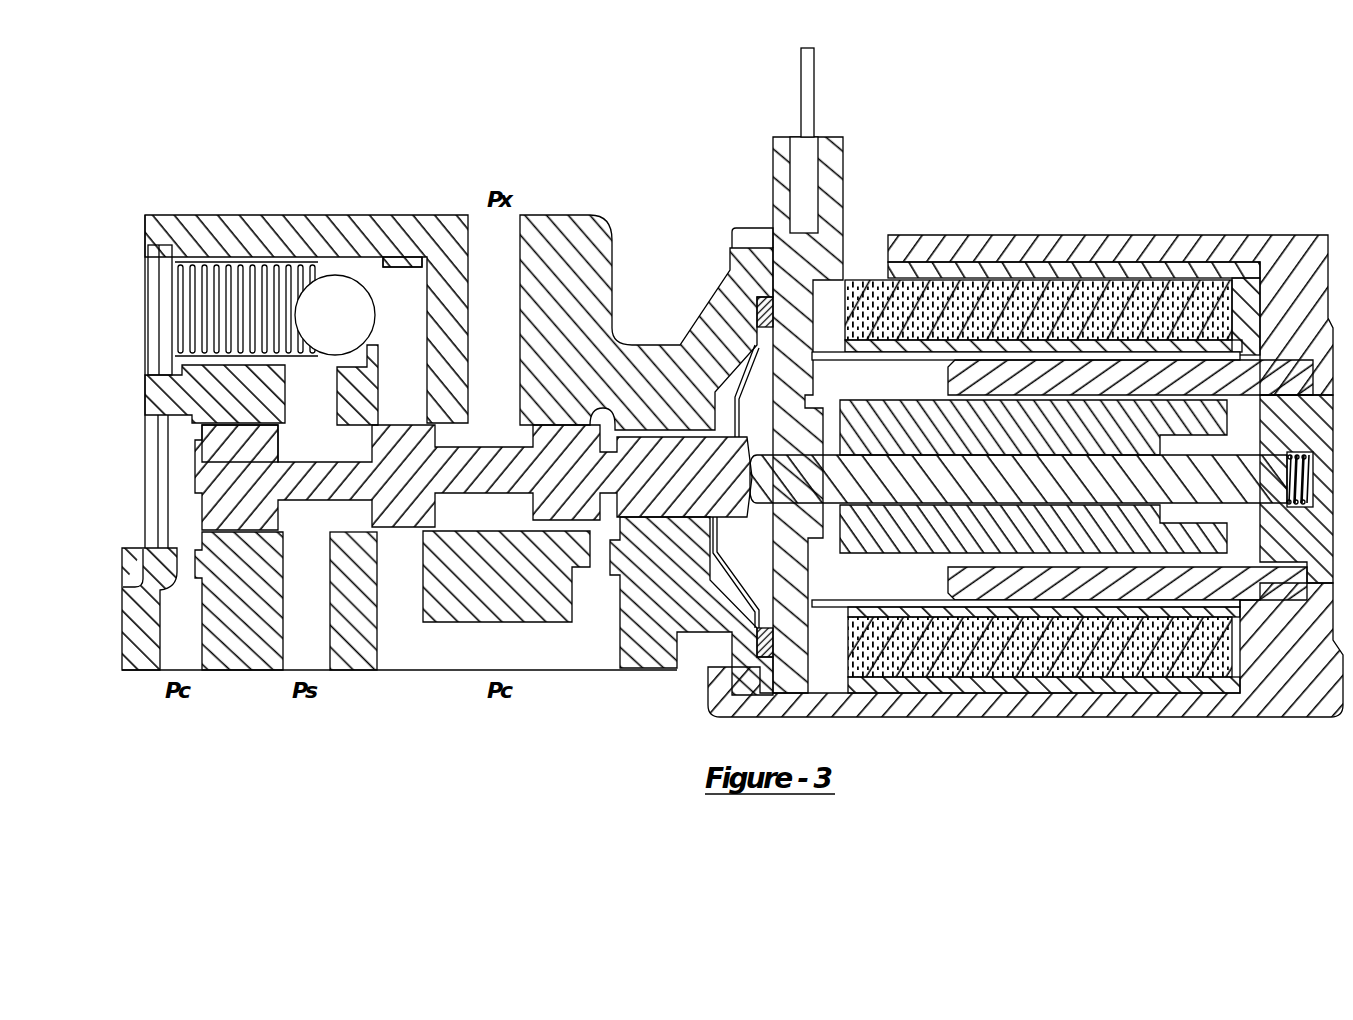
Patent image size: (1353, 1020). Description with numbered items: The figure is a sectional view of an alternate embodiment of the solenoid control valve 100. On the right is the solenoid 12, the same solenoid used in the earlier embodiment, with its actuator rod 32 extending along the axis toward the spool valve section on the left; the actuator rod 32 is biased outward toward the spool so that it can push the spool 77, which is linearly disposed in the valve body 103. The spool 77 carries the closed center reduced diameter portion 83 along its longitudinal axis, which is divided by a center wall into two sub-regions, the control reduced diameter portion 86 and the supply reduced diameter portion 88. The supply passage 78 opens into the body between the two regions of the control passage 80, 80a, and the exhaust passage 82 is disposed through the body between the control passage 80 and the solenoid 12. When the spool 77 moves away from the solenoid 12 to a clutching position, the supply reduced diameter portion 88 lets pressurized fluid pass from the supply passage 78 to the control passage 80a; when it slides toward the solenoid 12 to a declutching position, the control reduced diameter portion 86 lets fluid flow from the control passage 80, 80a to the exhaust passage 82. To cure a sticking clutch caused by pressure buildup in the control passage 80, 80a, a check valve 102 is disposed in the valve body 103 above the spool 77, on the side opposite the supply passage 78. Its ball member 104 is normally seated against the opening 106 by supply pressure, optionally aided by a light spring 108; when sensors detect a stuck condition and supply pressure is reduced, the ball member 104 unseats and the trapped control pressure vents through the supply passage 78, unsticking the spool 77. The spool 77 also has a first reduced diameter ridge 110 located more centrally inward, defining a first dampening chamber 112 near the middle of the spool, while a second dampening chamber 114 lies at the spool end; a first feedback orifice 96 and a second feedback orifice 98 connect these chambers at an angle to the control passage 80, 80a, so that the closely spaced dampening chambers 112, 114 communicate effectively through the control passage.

The solenoid 12 is at (1298, 233).
The actuator rod 32 is at (1030, 480).
The spool 77 is at (212, 441).
The supply passage 78 is at (310, 625).
The control passage 80 is at (470, 648).
The control passage 80a is at (180, 639).
The exhaust passage 82 is at (502, 248).
The closed center reduced diameter portion 83 is at (398, 483).
The control reduced diameter portion 86 is at (500, 440).
The supply reduced diameter portion 88 is at (318, 445).
The first feedback orifice 96 is at (612, 548).
The second feedback orifice 98 is at (180, 558).
The valve 100 is at (1036, 145).
The check valve 102 is at (368, 283).
The valve body 103 is at (150, 213).
The ball member 104 is at (358, 318).
The opening 106 is at (382, 302).
The light spring 108 is at (212, 270).
The first reduced diameter ridge 110 is at (645, 430).
The first dampening chamber 112 is at (647, 567).
The second dampening chamber 114 is at (183, 527).